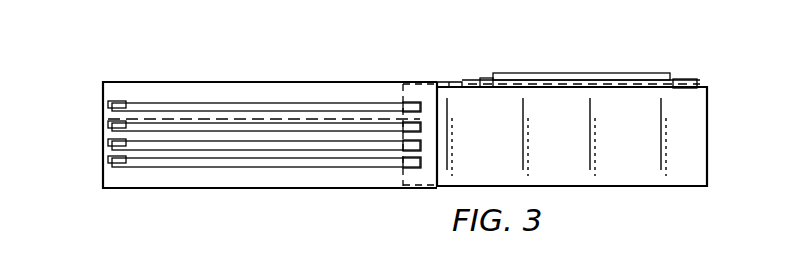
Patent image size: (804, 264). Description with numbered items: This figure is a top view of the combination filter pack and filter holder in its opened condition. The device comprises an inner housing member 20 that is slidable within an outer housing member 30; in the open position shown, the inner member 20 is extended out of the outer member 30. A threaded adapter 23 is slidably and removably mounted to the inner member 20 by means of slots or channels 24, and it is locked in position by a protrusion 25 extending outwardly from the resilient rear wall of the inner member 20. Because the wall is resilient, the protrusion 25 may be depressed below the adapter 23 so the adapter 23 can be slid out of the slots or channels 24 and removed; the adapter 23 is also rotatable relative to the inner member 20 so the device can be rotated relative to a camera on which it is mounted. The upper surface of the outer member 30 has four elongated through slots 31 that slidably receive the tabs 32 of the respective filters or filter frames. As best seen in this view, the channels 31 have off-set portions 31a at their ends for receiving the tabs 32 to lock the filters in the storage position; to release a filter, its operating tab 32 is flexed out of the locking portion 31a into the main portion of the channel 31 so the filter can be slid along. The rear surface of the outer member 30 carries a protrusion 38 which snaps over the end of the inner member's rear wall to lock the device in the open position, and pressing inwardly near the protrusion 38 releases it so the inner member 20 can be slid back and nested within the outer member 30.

The inner housing member 20 is at (711, 149).
The threaded adapter 23 is at (667, 81).
The slots or channels 24 is at (485, 80).
The protrusion 25 is at (453, 84).
The outer housing member 30 is at (186, 80).
The elongated through slots 31 is at (212, 130).
The off-set portions 31a is at (124, 100).
The tabs 32 is at (108, 124).
The protrusion 38 is at (413, 83).